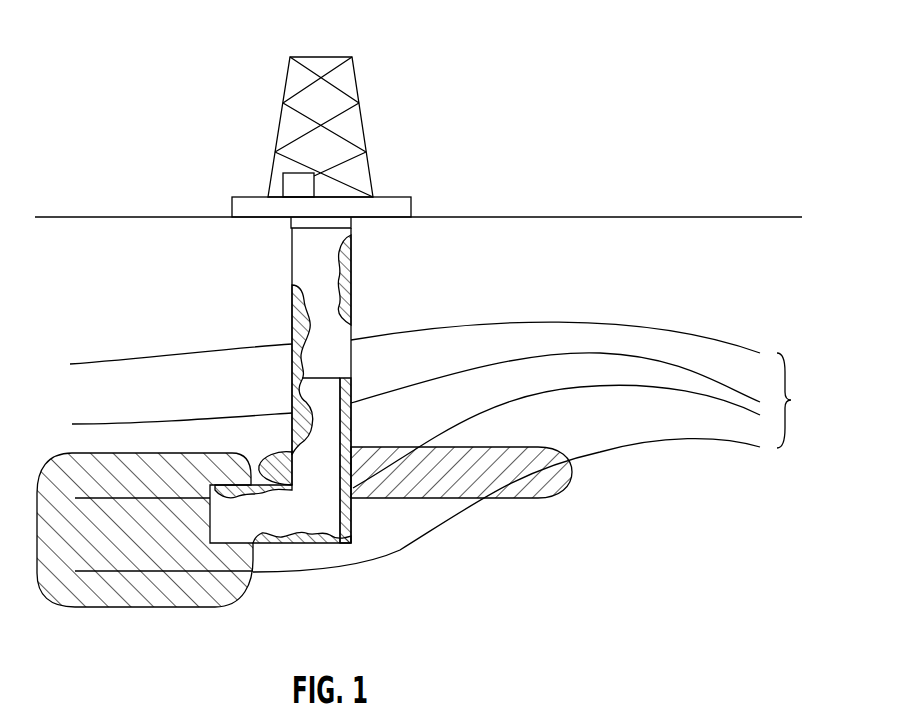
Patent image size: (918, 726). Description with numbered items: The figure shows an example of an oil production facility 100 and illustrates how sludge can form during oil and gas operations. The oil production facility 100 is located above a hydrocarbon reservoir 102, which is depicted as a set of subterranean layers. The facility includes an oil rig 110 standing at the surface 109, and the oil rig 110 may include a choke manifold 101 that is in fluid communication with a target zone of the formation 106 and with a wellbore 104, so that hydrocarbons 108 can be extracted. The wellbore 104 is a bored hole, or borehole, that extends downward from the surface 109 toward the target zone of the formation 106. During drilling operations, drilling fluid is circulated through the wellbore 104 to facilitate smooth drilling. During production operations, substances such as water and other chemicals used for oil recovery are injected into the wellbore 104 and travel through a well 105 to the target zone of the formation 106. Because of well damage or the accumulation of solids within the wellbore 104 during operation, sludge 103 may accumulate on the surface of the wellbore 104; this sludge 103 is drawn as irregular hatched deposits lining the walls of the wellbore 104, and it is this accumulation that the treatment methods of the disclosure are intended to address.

The oil production facility 100 is at (493, 53).
The choke manifold 101 is at (282, 192).
The hydrocarbon reservoir 102 is at (452, 447).
The sludge 103 is at (300, 365).
The wellbore 104 is at (292, 284).
The well 105 is at (316, 287).
The formation 106 is at (250, 580).
The hydrocarbons 108 is at (522, 498).
The surface 109 is at (690, 217).
The oil rig 110 is at (351, 372).